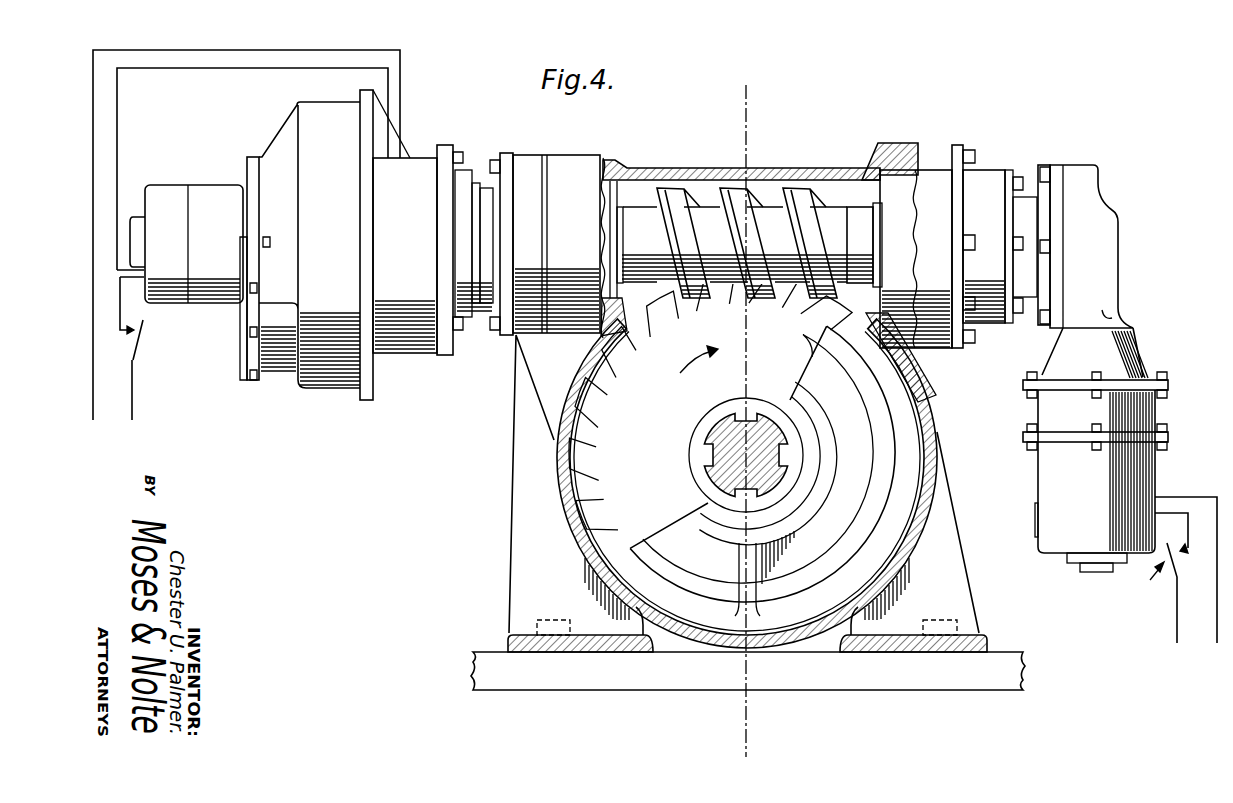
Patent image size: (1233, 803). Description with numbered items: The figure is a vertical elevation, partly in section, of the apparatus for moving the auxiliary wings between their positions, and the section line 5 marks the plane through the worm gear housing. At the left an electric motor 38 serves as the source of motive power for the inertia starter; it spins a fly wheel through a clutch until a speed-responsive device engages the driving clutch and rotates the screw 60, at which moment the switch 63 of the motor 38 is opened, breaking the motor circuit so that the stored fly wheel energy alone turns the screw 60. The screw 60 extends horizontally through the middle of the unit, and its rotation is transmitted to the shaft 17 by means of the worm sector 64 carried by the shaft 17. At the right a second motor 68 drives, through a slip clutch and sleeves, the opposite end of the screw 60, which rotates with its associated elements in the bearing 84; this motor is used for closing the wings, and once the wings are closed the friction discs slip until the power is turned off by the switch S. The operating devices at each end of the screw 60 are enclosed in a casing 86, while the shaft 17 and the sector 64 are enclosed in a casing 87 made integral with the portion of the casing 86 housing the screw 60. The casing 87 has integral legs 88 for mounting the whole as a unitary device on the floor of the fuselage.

The section line 5- 5 is at (766, 83).
The shaft 17 is at (790, 456).
The electric motor 38 is at (205, 197).
The screw 60 is at (682, 197).
The switch 63 is at (140, 333).
The worm sector 64 is at (656, 518).
The motor 68 is at (1145, 480).
The bearing 84 is at (900, 177).
The casing 86 is at (571, 166).
The casing 87 is at (934, 485).
The legs 88 is at (955, 578).
The switch S is at (1177, 570).